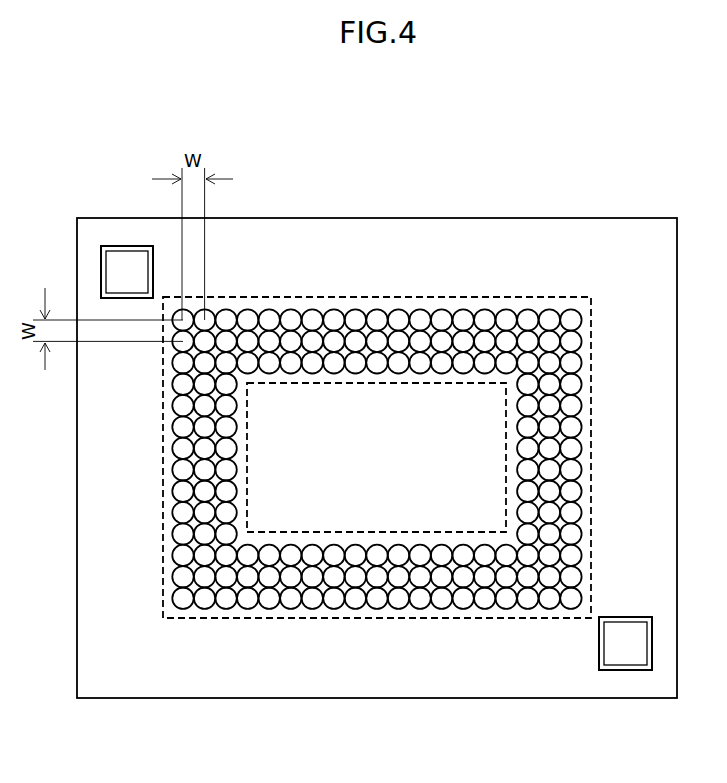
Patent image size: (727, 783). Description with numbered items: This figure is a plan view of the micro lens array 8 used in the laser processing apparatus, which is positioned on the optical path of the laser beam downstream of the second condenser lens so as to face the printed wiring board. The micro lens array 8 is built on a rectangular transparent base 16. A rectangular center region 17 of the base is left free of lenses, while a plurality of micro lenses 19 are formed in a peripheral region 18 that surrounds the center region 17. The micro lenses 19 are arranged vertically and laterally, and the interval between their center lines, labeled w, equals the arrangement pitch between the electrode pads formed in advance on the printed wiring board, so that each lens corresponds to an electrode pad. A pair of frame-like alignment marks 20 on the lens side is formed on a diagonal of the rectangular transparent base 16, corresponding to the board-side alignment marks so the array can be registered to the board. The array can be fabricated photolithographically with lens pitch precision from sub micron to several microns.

The micro lens array 8 is at (377, 408).
The rectangular transparent base 16 is at (470, 232).
The rectangular center region 17 is at (295, 505).
The peripheral region 18 is at (366, 610).
The micro lenses 19 is at (376, 340).
The alignment marks on the lens side 20 is at (112, 246).